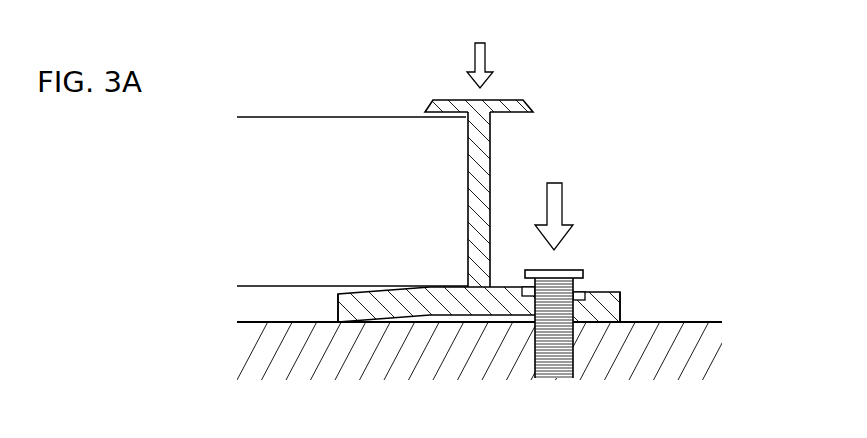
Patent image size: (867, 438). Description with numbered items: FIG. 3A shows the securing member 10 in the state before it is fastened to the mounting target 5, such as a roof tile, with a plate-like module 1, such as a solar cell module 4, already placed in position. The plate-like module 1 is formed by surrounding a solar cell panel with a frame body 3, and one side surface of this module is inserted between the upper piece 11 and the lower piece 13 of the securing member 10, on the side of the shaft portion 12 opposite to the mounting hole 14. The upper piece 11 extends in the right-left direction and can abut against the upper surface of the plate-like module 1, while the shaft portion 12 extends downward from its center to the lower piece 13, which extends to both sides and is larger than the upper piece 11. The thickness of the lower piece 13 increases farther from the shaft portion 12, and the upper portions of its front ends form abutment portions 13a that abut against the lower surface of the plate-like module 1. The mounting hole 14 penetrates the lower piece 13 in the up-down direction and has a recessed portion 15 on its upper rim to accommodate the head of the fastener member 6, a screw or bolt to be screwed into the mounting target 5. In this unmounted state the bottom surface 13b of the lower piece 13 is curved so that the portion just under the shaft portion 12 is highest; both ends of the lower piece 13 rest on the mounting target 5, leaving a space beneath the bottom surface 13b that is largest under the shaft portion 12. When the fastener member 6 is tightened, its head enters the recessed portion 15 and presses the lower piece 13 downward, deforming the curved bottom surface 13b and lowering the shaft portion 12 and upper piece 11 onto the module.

The plate-like module 1 is at (351, 156).
The solar cell module 4 is at (352, 176).
The frame body 3 is at (322, 145).
The securing member 10 is at (474, 149).
The upper piece 11 is at (447, 99).
The shaft portion 12 is at (490, 146).
The lower piece 13 is at (482, 312).
The abutment portion 13a is at (337, 289).
The bottom surface 13b is at (437, 317).
The recessed portion 15 is at (531, 293).
The fastener member 6 is at (571, 313).
The mounting hole 14 is at (568, 346).
The mounting target 5 is at (703, 322).